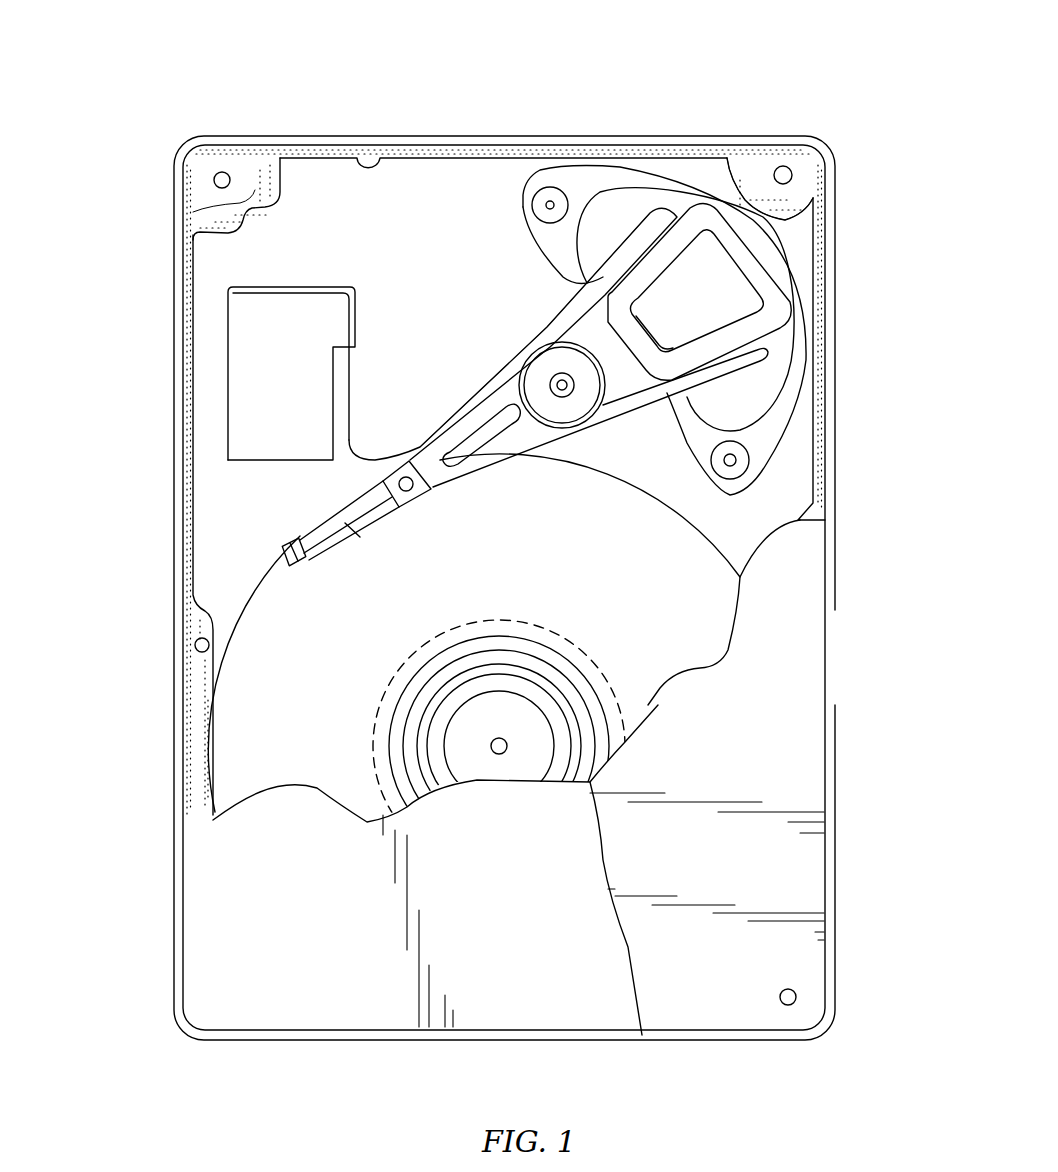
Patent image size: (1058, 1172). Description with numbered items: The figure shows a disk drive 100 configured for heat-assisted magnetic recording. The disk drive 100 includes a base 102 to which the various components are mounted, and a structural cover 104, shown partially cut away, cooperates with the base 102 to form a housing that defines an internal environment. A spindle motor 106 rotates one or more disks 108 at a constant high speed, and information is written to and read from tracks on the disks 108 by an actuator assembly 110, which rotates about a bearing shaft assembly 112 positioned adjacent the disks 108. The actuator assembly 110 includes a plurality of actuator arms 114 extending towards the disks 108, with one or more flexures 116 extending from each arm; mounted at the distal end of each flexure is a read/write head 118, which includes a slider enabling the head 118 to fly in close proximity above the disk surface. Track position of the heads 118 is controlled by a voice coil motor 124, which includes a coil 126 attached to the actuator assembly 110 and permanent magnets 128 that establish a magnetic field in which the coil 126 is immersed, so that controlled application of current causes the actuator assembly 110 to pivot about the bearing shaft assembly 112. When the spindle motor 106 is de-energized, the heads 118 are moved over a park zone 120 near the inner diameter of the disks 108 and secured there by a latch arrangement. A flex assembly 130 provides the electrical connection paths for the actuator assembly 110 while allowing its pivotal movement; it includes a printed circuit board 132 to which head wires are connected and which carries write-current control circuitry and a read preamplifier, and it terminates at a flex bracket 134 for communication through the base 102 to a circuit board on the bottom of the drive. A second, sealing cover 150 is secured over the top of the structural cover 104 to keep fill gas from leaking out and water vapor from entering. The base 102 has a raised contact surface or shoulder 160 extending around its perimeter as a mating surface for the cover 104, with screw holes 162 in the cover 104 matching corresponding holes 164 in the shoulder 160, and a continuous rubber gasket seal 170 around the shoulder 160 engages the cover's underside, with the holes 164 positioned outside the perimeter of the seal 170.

The disk drive 100 is at (230, 98).
The base 102 is at (236, 500).
The structural cover 104 is at (803, 865).
The spindle motor 106 is at (499, 755).
The disks 108 is at (332, 790).
The actuator assembly 110 is at (555, 466).
The bearing shaft assembly 112 is at (562, 385).
The actuator arms 114 is at (492, 468).
The flexures 116 is at (352, 530).
The read/write head 118 is at (290, 572).
The park zone 120 is at (378, 740).
The voice coil motor 124 is at (616, 152).
The coil 126 is at (765, 283).
The permanent magnets 128 is at (598, 237).
The flex assembly 130 is at (463, 387).
The printed circuit board 132 is at (513, 342).
The flex bracket 134 is at (277, 387).
The sealing cover 150 is at (237, 857).
The raised contact surface or shoulder 160 is at (795, 152).
The screw holes 162 is at (797, 997).
The holes 164 is at (216, 177).
The seal 170 is at (790, 203).